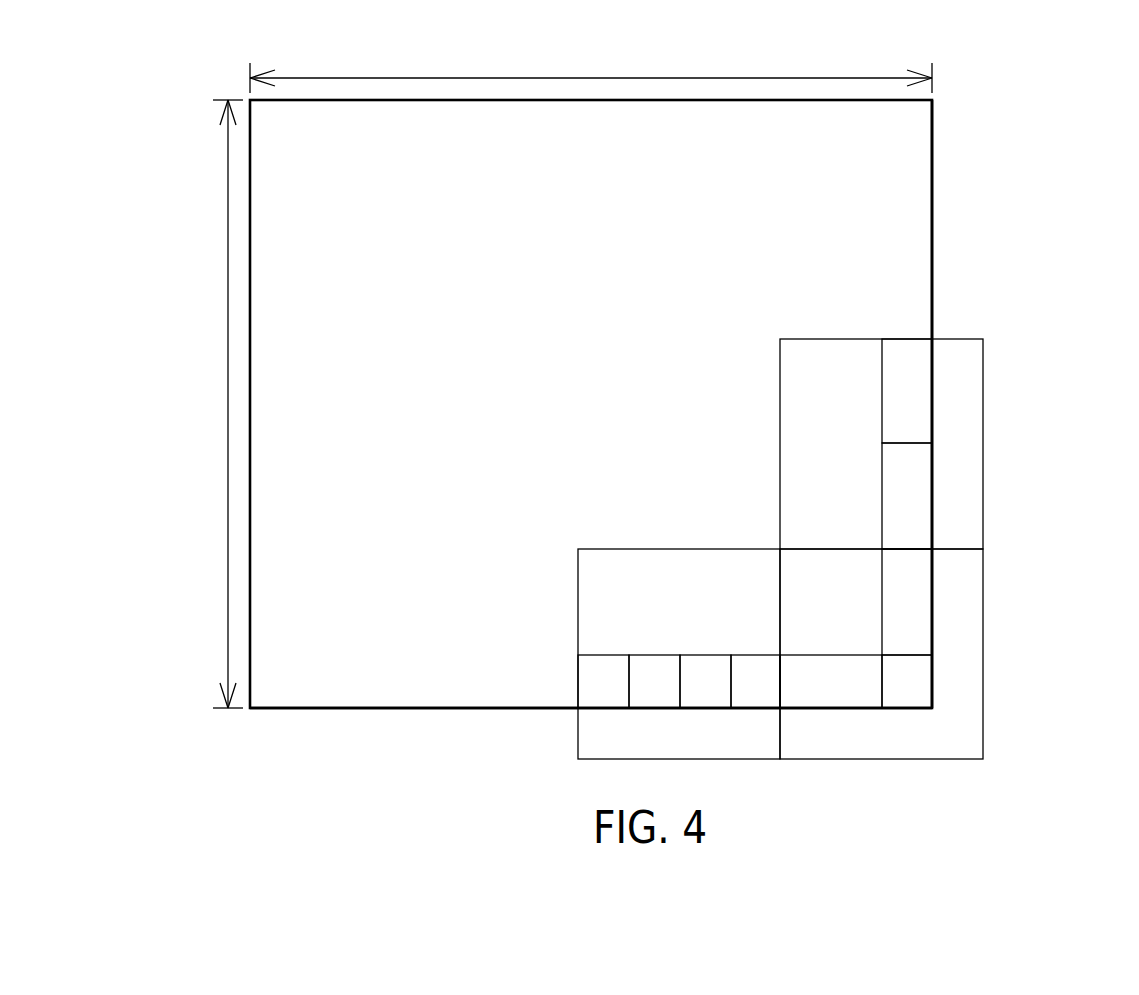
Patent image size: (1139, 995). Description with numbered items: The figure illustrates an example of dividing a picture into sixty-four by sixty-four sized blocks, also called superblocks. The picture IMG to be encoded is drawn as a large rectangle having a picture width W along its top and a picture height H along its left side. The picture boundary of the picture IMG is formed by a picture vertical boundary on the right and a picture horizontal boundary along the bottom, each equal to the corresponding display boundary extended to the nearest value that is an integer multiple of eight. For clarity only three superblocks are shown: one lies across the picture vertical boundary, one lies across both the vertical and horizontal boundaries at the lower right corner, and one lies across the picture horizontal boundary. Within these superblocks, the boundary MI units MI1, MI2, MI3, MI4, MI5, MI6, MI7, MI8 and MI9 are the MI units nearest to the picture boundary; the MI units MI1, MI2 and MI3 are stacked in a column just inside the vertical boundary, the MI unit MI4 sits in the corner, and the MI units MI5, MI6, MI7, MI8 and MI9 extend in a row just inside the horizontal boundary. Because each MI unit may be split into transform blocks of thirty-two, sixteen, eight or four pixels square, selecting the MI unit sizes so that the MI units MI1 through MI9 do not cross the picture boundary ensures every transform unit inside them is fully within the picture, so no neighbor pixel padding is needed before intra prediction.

The picture IMG is at (990, 93).
The picture width W is at (591, 70).
The picture height H is at (221, 404).
The MI unit MI1 is at (907, 391).
The MI unit MI2 is at (907, 496).
The MI unit MI3 is at (907, 602).
The MI unit MI4 is at (907, 681).
The MI unit MI5 is at (831, 681).
The MI unit MI6 is at (755, 681).
The MI unit MI7 is at (705, 681).
The MI unit MI8 is at (654, 681).
The MI unit MI9 is at (603, 681).